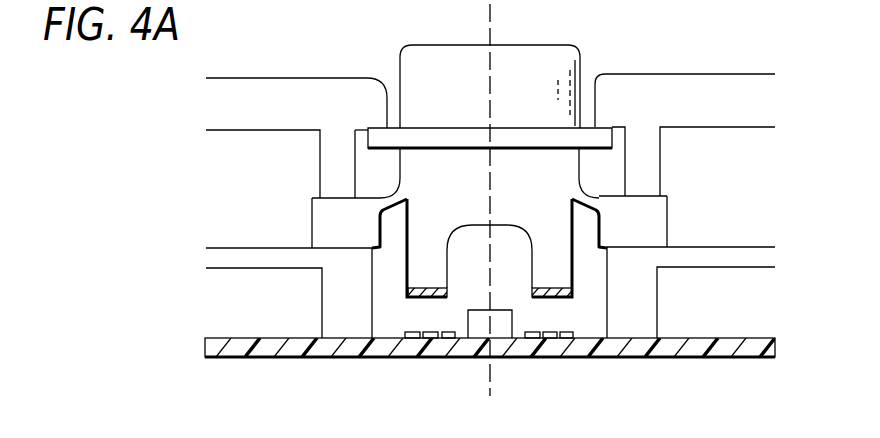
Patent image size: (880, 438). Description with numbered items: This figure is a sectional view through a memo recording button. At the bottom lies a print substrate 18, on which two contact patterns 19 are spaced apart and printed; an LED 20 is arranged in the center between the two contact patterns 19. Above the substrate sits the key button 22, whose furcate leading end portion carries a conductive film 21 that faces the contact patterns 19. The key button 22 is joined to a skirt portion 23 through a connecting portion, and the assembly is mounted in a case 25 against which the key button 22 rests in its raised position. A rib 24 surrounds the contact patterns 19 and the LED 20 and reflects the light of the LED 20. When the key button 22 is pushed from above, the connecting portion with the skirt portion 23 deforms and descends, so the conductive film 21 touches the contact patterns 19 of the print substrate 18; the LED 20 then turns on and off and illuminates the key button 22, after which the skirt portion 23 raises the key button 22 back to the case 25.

The print substrate 18 is at (722, 358).
The contact patterns 19 is at (551, 340).
The LED 20 is at (503, 313).
The conductive film 21 is at (550, 298).
The key button 22 is at (543, 47).
The skirt portion 23 is at (665, 216).
The rib 24 is at (343, 302).
The case 25 is at (634, 75).